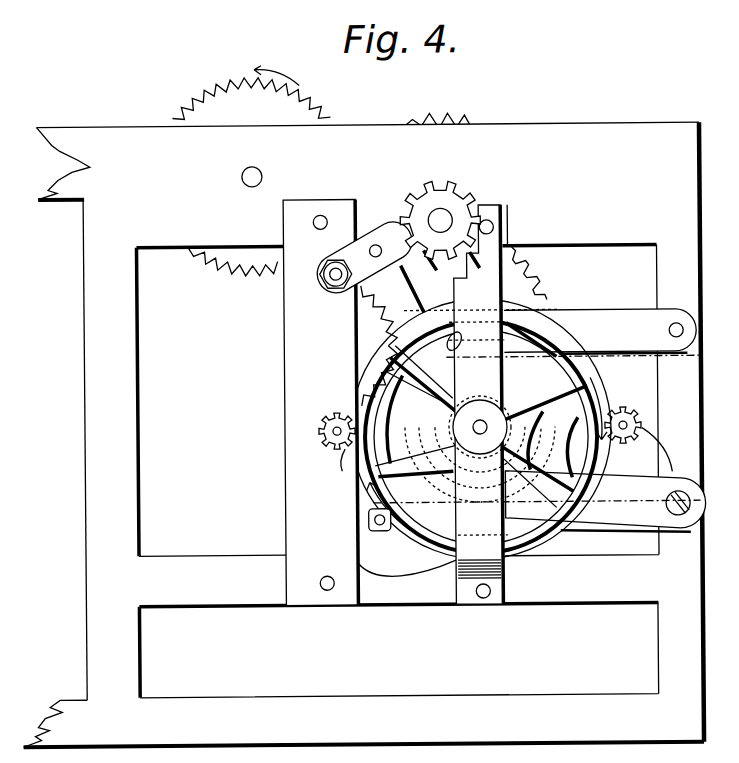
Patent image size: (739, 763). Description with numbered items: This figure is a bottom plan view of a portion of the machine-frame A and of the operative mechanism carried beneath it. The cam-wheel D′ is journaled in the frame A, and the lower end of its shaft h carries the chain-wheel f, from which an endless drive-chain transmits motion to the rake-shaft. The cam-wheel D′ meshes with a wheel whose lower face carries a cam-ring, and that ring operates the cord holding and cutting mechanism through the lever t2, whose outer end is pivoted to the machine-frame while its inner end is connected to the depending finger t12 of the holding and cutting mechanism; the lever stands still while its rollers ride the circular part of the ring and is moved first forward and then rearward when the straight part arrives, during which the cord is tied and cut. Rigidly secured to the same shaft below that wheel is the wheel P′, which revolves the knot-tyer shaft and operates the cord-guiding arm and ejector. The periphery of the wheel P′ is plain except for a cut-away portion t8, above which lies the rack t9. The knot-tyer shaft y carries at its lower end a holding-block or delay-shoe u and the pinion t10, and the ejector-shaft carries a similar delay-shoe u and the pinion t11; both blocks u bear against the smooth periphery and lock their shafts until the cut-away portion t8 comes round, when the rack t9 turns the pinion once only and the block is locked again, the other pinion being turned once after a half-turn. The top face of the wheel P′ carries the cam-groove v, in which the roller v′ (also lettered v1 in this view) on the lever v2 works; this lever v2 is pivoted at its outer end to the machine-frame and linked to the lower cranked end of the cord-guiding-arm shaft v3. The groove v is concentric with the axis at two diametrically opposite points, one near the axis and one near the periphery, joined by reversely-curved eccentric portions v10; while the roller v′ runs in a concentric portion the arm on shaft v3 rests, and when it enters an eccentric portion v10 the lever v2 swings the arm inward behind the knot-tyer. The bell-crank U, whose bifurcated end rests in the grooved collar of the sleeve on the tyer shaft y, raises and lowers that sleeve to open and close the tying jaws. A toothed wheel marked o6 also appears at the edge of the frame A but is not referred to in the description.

The machine-frame A is at (362, 434).
The gear wheel o6 is at (252, 170).
The cam-wheel D′ is at (484, 195).
The lever v2 is at (600, 332).
The lever t2 is at (605, 501).
The pinion t11 is at (622, 411).
The knot-tyer shaft y is at (642, 421).
The wheel P′ is at (481, 437).
The hub arbor v1 is at (536, 422).
The bell-crank U is at (320, 403).
The cut-away portion t8 is at (388, 342).
The rack t9 is at (362, 382).
The pinion t10 is at (323, 426).
The holding-block or delay-shoe u is at (337, 463).
The depending finger t12 is at (380, 527).
The cord-guiding-arm shaft v3 is at (329, 281).
The cam-groove v is at (435, 281).
The roller v′ is at (455, 353).
The eccentric or reversely-curved grooves v10 is at (572, 436).
The chain-wheel f is at (457, 202).
The shaft h is at (440, 220).